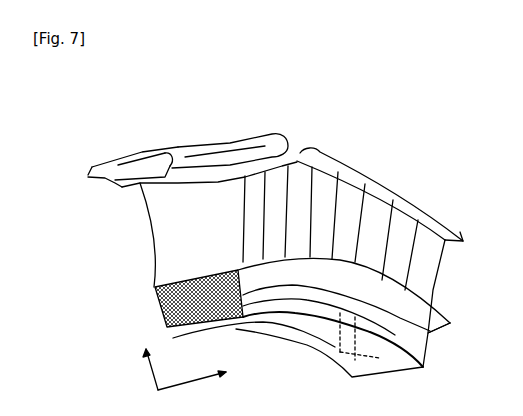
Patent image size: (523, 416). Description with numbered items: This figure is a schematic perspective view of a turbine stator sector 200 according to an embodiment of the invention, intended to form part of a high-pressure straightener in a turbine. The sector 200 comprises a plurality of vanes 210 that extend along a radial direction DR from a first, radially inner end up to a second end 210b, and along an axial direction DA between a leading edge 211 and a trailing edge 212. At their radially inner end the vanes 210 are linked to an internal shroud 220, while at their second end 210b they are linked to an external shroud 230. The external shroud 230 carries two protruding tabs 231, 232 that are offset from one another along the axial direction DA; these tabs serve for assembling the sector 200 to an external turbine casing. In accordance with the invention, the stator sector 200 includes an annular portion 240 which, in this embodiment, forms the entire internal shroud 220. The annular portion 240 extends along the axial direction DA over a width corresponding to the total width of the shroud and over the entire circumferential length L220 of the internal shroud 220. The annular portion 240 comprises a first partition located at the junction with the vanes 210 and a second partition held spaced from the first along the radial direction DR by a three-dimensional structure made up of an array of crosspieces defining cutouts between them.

The stator sector 200 is at (366, 130).
The vanes 210 is at (266, 142).
The second end 210b is at (441, 214).
The leading edge 211 is at (158, 241).
The trailing edge 212 is at (441, 266).
The internal shroud 220 is at (153, 287).
The external shroud 230 is at (122, 194).
The protruding tab 231 is at (88, 174).
The protruding tab 232 is at (179, 145).
The annular portion 240 is at (150, 307).
The radial direction DR is at (146, 358).
The axial direction DA is at (204, 377).
The circumferential length of the internal shroud L220 is at (340, 357).